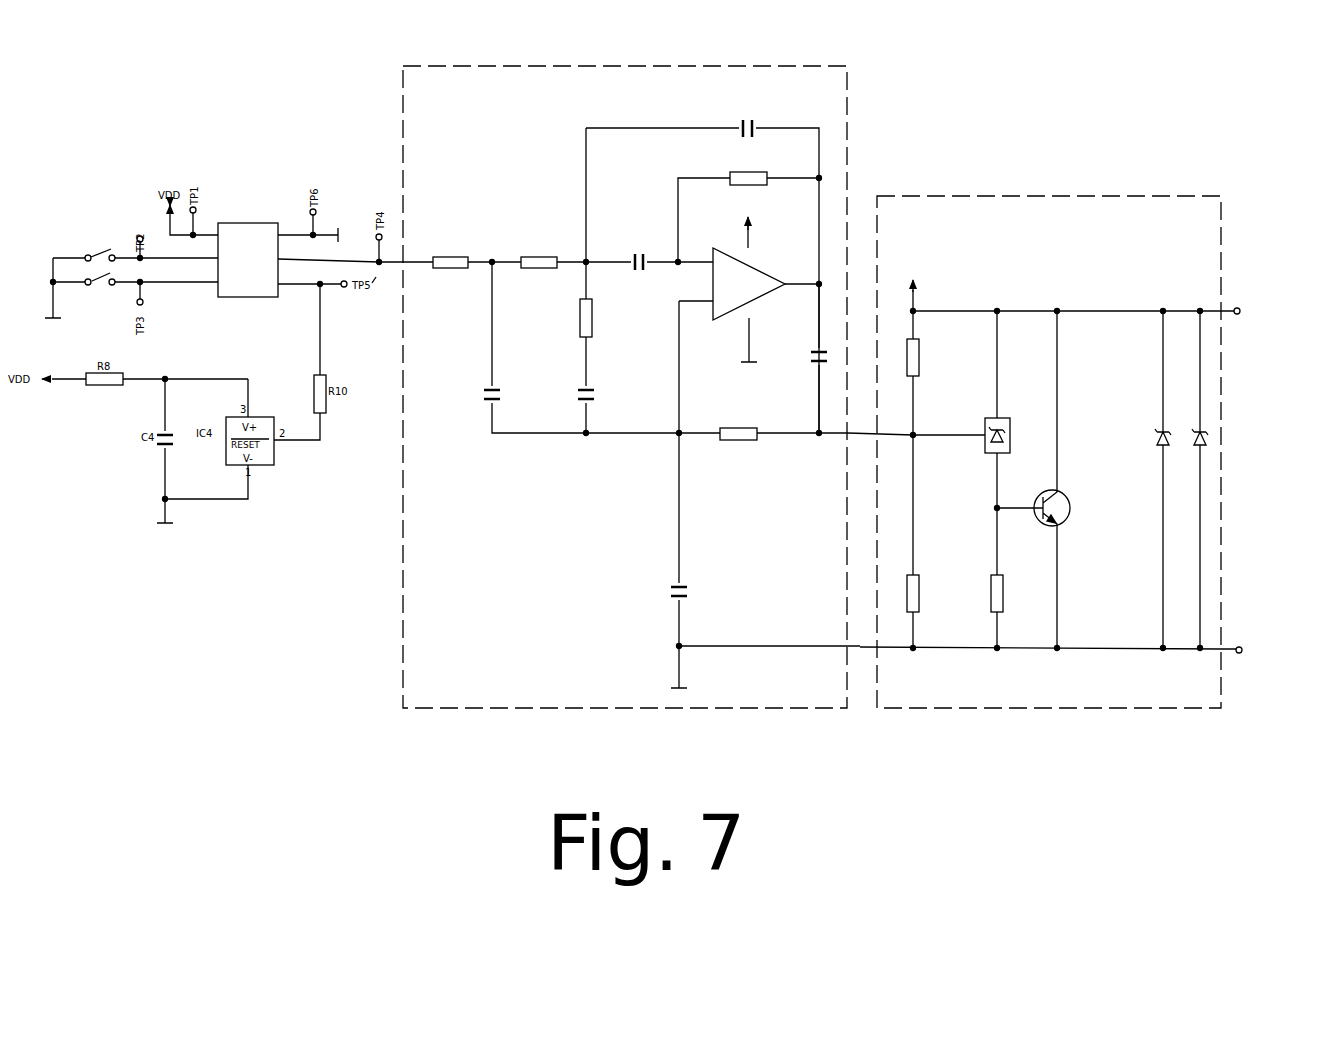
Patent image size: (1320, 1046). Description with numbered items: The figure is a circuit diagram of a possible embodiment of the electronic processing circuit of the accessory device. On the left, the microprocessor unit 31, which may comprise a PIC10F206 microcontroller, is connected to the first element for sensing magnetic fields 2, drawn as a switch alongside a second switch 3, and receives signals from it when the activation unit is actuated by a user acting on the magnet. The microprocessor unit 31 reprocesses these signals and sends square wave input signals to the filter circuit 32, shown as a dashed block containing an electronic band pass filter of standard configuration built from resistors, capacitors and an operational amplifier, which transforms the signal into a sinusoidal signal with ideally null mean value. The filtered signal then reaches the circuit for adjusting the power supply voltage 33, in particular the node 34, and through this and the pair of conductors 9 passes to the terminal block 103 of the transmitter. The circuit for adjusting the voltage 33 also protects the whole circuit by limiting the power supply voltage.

The first element for sensing magnetic fields 2 is at (96, 253).
The second switch 3 is at (99, 284).
The pair of conductors 9 is at (1225, 308).
The microprocessor unit 31 is at (234, 221).
The filter circuit 32 is at (602, 64).
The circuit for adjusting the power supply voltage 33 is at (1024, 194).
The node 34 is at (917, 439).
The terminal block 103 is at (1241, 311).